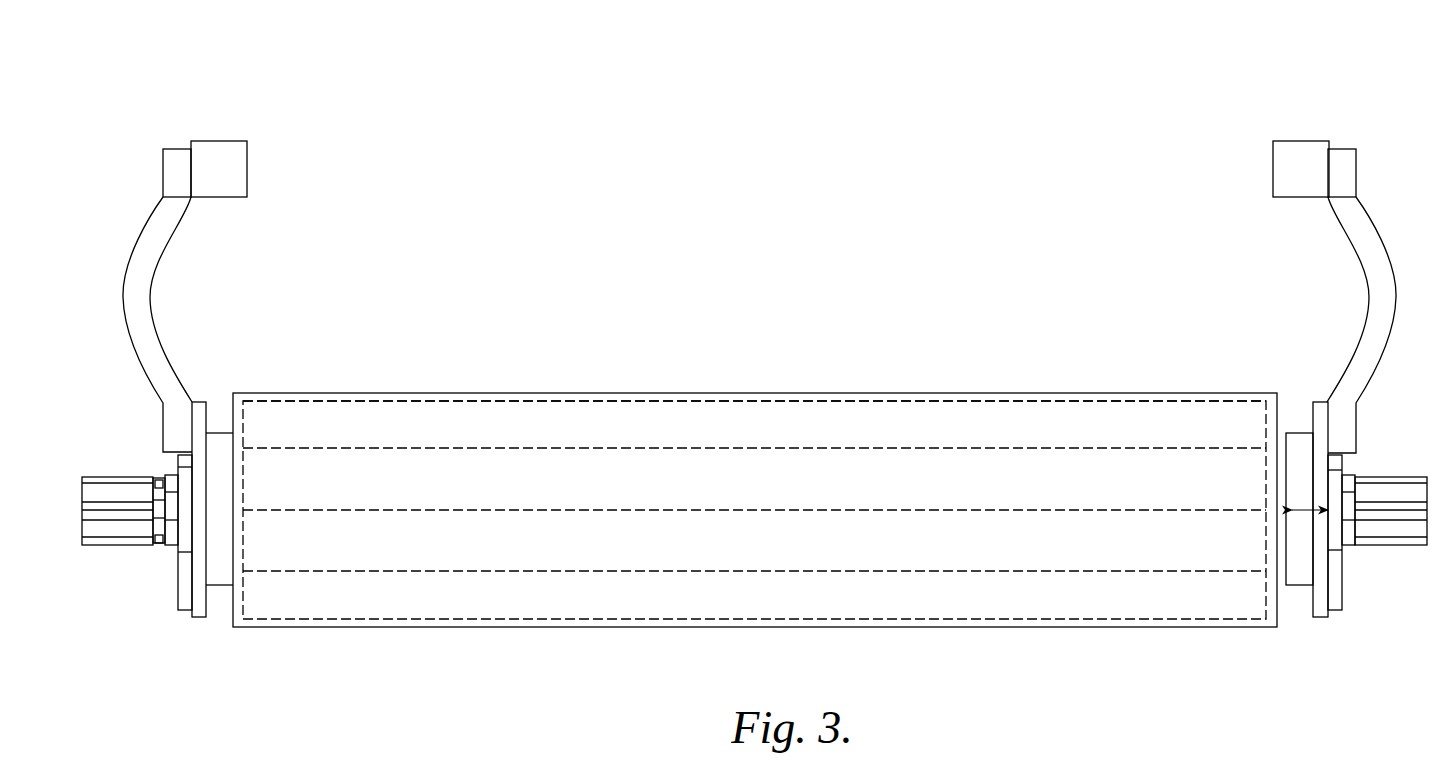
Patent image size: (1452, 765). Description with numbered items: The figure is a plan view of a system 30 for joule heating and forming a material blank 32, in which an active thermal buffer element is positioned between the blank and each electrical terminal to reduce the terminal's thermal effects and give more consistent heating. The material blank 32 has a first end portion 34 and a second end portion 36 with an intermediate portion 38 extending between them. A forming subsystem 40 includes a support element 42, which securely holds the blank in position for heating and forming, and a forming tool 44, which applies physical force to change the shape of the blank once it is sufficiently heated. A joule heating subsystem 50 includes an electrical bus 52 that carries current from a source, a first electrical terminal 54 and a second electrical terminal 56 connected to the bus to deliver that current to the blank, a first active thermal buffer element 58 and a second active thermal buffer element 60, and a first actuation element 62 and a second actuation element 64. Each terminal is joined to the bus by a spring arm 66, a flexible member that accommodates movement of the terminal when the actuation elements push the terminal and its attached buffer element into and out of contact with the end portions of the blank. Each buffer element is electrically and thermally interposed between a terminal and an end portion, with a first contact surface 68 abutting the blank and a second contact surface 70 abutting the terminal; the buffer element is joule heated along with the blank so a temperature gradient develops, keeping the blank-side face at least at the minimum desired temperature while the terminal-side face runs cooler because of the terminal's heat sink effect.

The system 30 is at (482, 115).
The material blank 32 is at (775, 600).
The first end portion 34 is at (285, 605).
The second end portion 36 is at (1223, 610).
The intermediate portion 38 is at (612, 592).
The forming subsystem 40 is at (1086, 385).
The support element 42 is at (503, 400).
The forming tool 44 is at (725, 448).
The joule heating subsystem 50 is at (1280, 368).
The electrical bus 52 is at (1280, 160).
The first electrical terminal 54 is at (198, 415).
The second electrical terminal 56 is at (1321, 408).
The first active thermal buffer element 58 is at (220, 573).
The second active thermal buffer element 60 is at (1300, 485).
The first actuation element 62 is at (125, 485).
The second actuation element 64 is at (1388, 490).
The spring arm 66 is at (1370, 245).
The first contact surface 68 is at (1282, 565).
The second contact surface 70 is at (1318, 557).